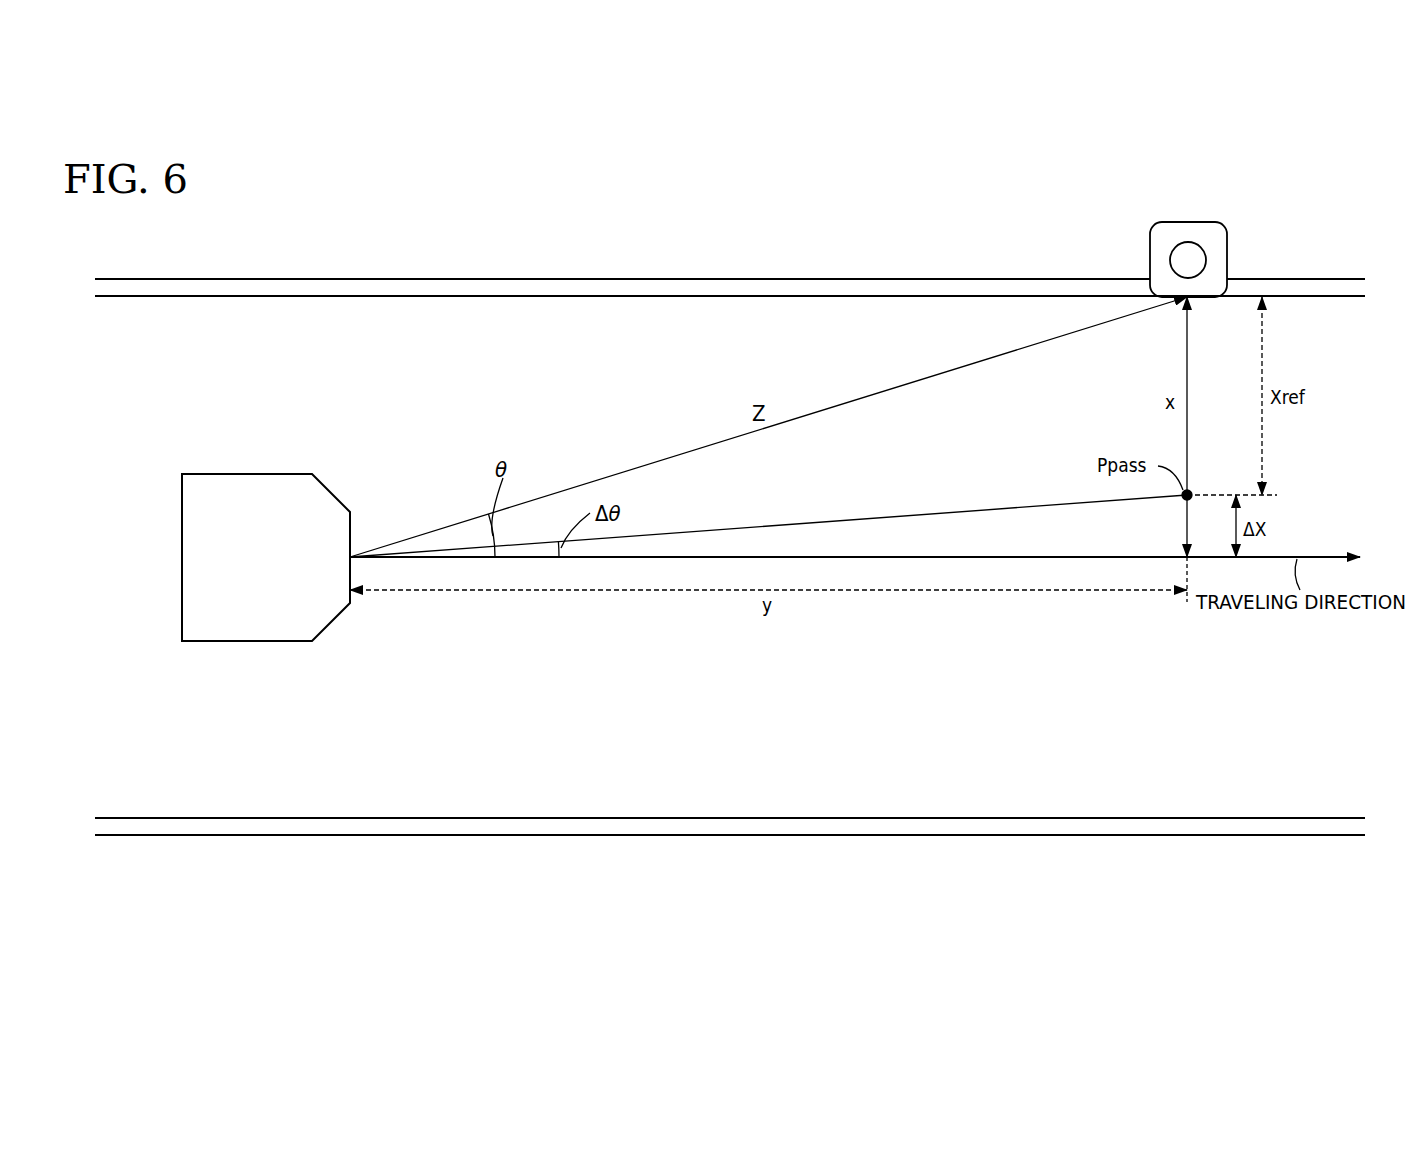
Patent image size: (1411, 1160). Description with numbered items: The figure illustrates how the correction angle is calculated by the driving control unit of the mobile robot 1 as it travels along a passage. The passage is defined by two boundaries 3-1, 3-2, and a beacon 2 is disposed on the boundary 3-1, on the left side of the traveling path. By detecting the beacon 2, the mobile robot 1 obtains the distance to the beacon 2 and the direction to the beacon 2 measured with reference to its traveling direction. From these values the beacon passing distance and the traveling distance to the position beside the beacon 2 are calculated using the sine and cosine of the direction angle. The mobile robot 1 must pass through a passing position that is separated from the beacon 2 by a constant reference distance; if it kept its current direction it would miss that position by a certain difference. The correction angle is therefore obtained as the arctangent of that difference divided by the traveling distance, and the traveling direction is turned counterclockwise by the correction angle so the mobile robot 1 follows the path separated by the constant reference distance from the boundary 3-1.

The mobile robot 1 is at (253, 642).
The beacon 2 is at (1186, 222).
The boundary 3-1 is at (272, 278).
The boundary 3-2 is at (275, 836).